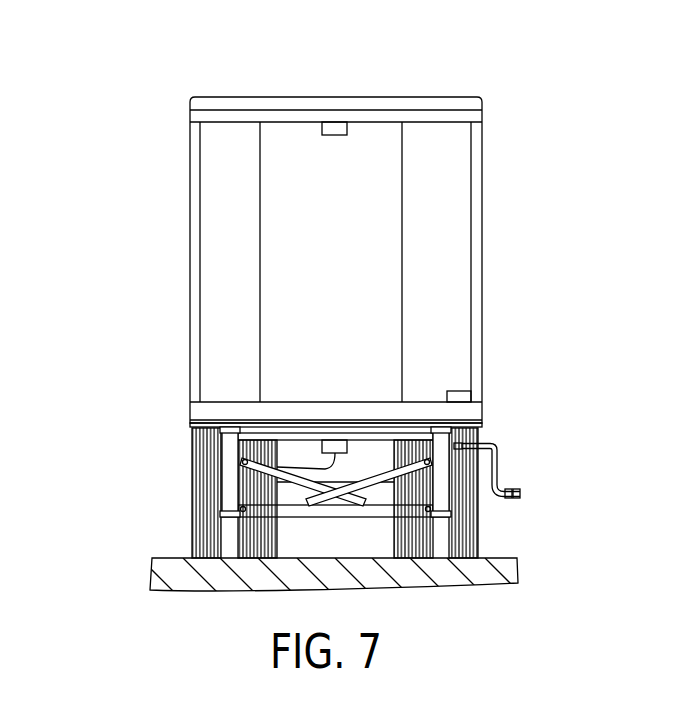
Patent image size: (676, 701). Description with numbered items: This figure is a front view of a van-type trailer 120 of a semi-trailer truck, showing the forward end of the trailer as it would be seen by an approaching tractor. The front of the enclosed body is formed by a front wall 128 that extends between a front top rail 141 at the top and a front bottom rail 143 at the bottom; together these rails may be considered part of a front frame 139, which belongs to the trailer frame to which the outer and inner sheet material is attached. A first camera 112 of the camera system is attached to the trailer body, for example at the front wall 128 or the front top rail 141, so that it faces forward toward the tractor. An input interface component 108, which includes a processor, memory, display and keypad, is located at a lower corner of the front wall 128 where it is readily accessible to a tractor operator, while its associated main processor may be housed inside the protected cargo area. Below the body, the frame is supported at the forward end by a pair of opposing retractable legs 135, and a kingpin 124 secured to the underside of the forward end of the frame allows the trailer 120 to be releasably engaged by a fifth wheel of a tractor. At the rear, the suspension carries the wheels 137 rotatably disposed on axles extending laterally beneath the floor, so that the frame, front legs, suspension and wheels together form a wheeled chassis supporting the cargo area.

The trailer 120 is at (118, 255).
The front top rail 141 is at (283, 108).
The first camera 112 is at (336, 136).
The front wall 128 is at (372, 224).
The front frame 139 is at (482, 258).
The input interface component 108 is at (458, 391).
The front bottom rail 143 is at (205, 413).
The kingpin 124 is at (247, 463).
The retractable legs 135 is at (228, 498).
The wheels 137 is at (477, 535).